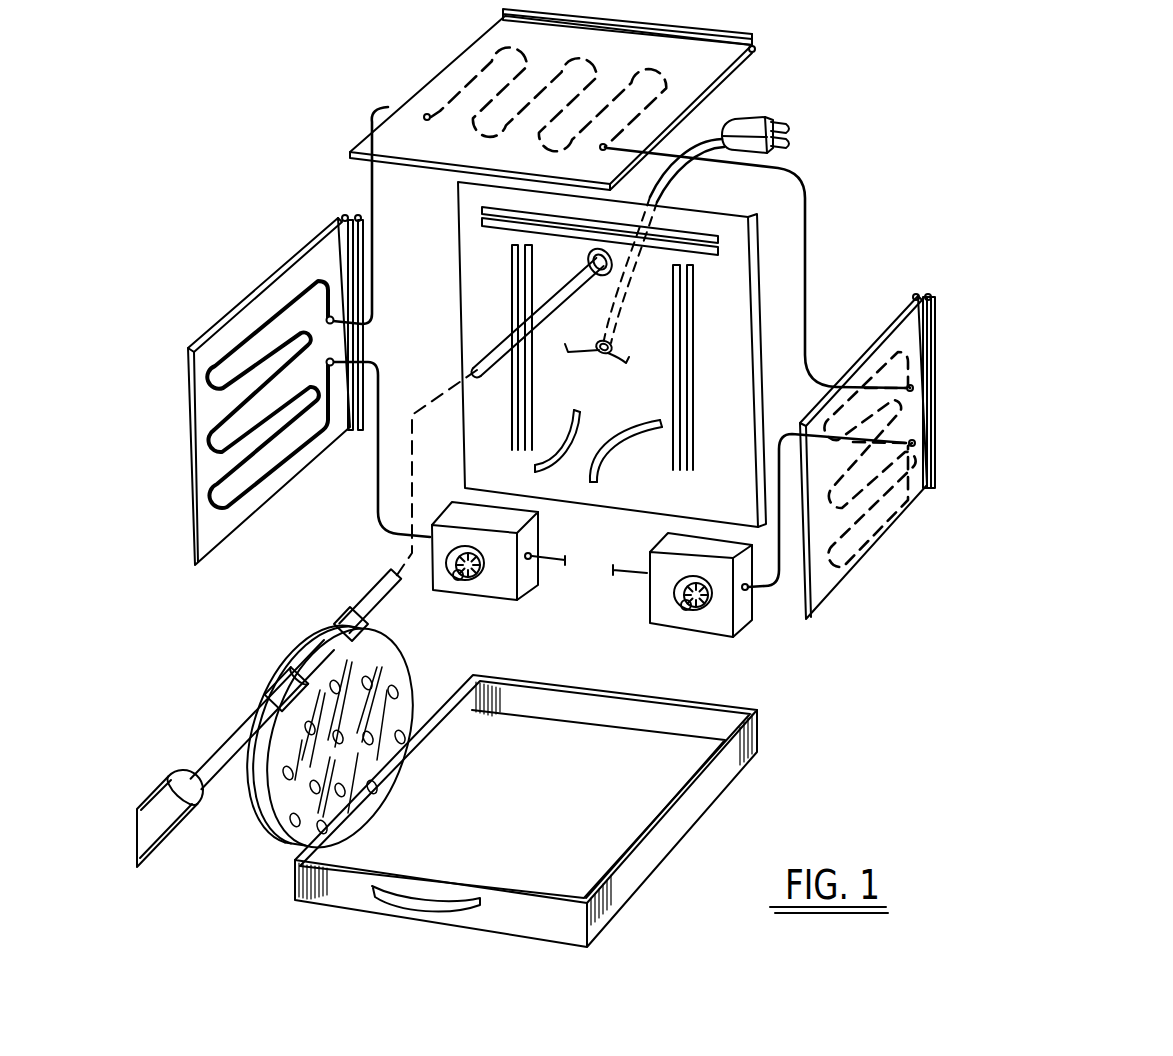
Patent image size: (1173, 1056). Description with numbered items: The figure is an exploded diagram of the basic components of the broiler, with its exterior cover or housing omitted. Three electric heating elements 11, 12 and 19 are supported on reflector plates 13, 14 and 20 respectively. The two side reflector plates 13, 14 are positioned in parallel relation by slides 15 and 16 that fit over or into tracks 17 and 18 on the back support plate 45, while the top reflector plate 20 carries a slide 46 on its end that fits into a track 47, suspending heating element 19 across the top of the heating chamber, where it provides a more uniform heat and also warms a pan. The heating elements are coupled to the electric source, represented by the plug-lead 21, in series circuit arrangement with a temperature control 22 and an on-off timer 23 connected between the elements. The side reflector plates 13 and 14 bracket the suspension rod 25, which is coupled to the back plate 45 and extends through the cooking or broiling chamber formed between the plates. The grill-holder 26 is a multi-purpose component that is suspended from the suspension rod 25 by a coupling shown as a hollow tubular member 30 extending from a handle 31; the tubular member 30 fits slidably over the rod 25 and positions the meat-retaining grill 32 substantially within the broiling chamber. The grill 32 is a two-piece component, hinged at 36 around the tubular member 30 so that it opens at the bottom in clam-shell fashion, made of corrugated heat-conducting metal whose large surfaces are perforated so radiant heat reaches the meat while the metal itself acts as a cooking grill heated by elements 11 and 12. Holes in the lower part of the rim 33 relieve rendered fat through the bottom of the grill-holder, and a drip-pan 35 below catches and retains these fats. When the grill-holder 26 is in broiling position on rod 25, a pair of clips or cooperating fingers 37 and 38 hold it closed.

The electric heating element 11 is at (237, 341).
The electric heating element 12 is at (865, 388).
The reflector plate 13 is at (273, 277).
The reflector plate 14 is at (888, 326).
The slide 15 is at (346, 218).
The slide 16 is at (927, 295).
The track 17 is at (511, 260).
The track 18 is at (694, 297).
The heating element 19 is at (463, 83).
The reflector plate 20 is at (470, 50).
The plug-lead 21 is at (770, 117).
The temperature control 22 is at (465, 583).
The on-off timer 23 is at (690, 614).
The suspension rod 25 is at (566, 295).
The grill-holder 26 is at (257, 656).
The tubular member 30 is at (362, 604).
The handle 31 is at (175, 773).
The meat-retaining grill 32 is at (256, 818).
The rim 33 is at (290, 842).
The drip-pan 35 is at (505, 921).
The hinge 36 is at (300, 662).
The clip 37 is at (534, 472).
The clip 38 is at (592, 484).
The back support plate 45 is at (751, 259).
The slide 46 is at (757, 44).
The track 47 is at (663, 226).